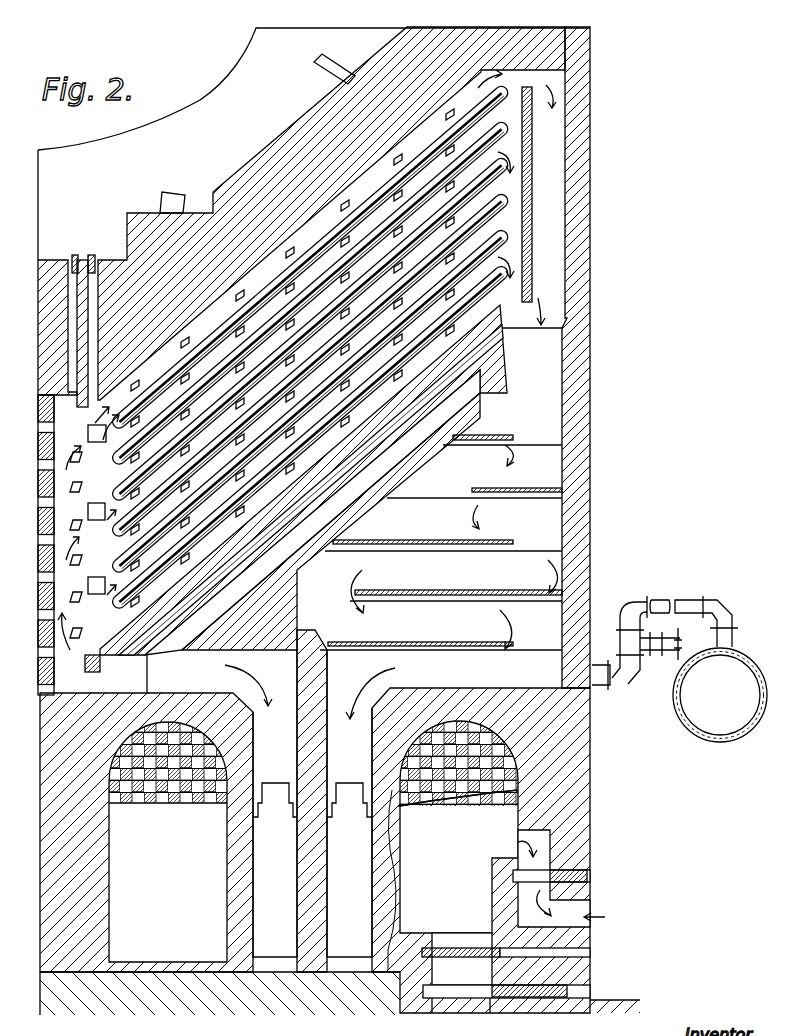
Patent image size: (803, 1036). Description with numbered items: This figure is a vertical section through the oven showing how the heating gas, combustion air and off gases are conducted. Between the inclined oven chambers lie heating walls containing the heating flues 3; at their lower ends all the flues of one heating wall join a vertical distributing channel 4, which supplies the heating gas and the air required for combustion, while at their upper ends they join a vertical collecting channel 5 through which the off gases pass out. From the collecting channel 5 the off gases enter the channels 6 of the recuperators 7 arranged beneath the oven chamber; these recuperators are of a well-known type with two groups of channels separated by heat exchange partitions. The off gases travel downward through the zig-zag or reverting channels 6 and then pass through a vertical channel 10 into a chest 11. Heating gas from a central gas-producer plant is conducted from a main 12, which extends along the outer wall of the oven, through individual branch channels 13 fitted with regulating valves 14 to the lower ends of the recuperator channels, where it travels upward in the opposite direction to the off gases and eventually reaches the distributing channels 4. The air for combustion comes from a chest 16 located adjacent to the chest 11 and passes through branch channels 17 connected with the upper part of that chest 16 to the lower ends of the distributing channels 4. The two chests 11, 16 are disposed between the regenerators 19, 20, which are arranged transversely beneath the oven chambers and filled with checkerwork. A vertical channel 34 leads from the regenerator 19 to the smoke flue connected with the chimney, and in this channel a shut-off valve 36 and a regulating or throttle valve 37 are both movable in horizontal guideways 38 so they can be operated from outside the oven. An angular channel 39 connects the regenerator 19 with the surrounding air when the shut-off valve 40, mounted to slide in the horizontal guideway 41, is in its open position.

The heating flues 3 is at (310, 347).
The vertical distributing channel 4 is at (57, 514).
The vertical collecting channel 5 is at (517, 197).
The recuperator channels 6 is at (441, 542).
The recuperators 7 is at (568, 592).
The vertical channel 10 is at (361, 725).
The chest 11 is at (349, 870).
The main 12 is at (720, 695).
The branch channels 13 is at (690, 600).
The regulating valves 14 is at (648, 653).
The chest 16 is at (275, 870).
The branch channels 17 is at (261, 725).
The regenerator 19 is at (458, 790).
The regenerator 20 is at (165, 806).
The vertical channel 34 is at (445, 936).
The shut-off valve 36 is at (462, 959).
The regulating or throttle valve 37 is at (575, 992).
The horizontal guideways 38 is at (588, 952).
The angular channel 39 is at (583, 908).
The shut-off valve 40 is at (580, 866).
The horizontal guideway 41 is at (590, 876).